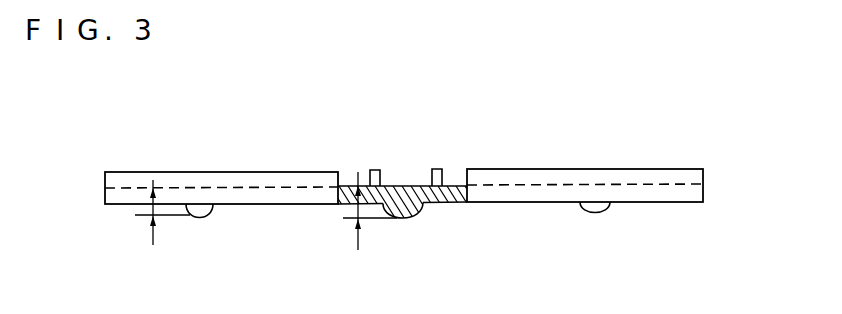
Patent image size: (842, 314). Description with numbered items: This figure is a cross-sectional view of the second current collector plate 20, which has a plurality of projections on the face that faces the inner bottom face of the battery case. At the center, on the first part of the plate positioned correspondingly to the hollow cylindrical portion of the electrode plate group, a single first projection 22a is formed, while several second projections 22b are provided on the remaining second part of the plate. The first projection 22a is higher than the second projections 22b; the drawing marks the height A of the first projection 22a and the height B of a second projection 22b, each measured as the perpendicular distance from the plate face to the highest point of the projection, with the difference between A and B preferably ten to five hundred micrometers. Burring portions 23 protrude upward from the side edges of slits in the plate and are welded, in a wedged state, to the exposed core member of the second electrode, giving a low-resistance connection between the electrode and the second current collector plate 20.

The second current collector plate 20 is at (565, 132).
The burring portion 23 is at (212, 172).
The first projection 22a is at (410, 220).
The second projection 22b is at (203, 219).
The height of the first projection A is at (344, 219).
The height of the second projection B is at (137, 216).